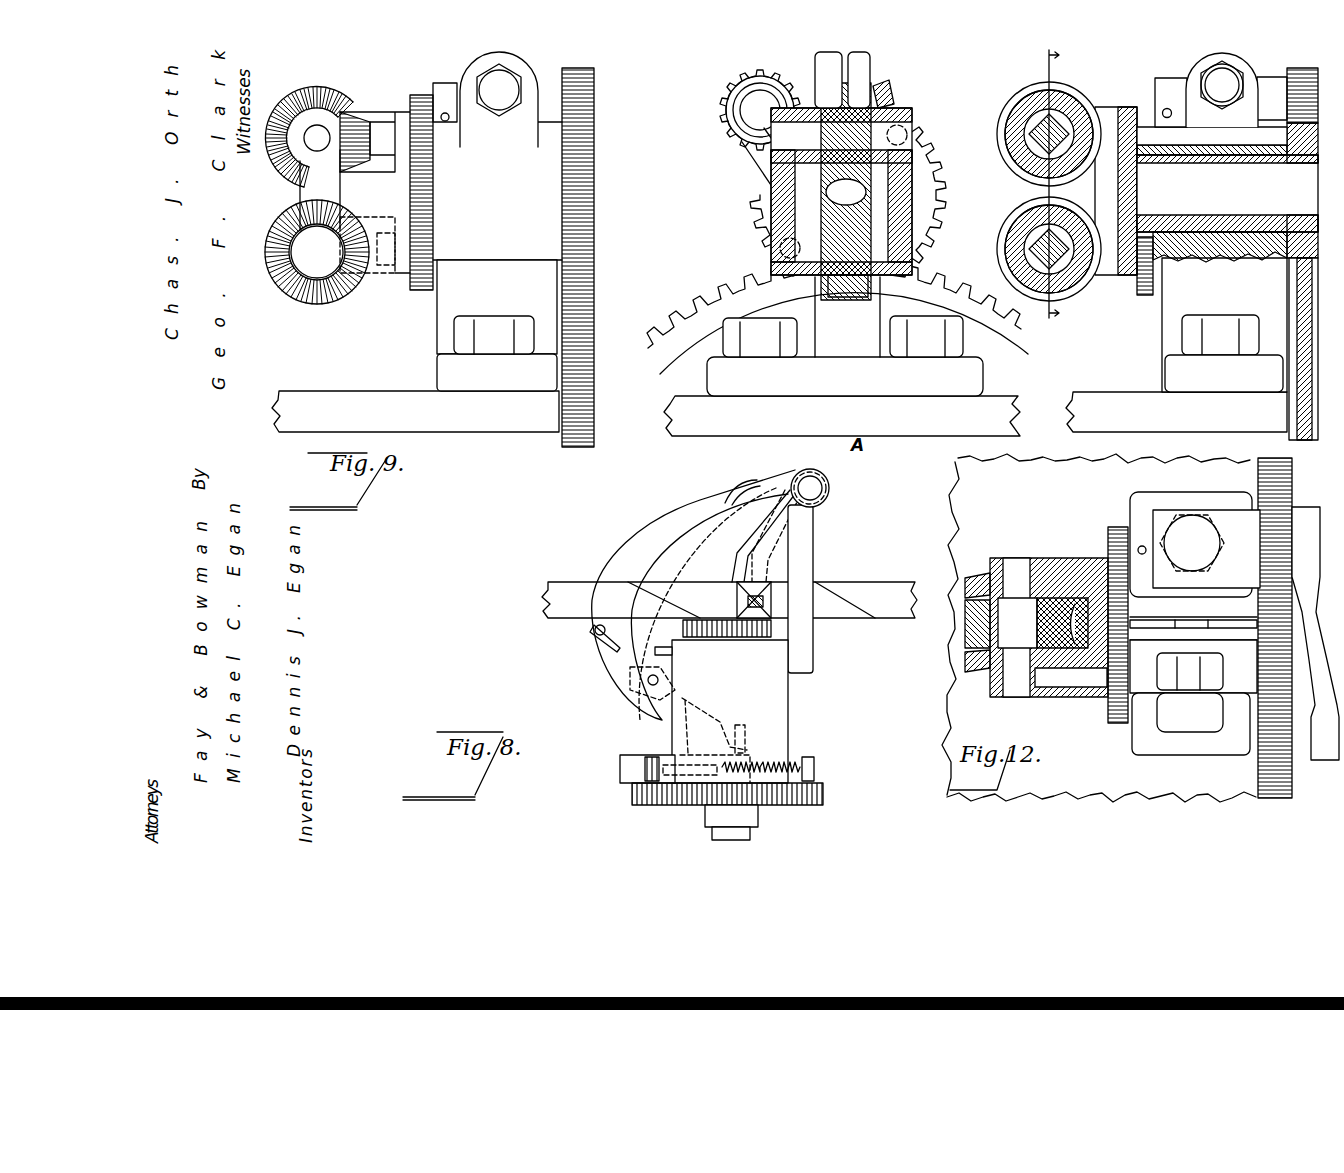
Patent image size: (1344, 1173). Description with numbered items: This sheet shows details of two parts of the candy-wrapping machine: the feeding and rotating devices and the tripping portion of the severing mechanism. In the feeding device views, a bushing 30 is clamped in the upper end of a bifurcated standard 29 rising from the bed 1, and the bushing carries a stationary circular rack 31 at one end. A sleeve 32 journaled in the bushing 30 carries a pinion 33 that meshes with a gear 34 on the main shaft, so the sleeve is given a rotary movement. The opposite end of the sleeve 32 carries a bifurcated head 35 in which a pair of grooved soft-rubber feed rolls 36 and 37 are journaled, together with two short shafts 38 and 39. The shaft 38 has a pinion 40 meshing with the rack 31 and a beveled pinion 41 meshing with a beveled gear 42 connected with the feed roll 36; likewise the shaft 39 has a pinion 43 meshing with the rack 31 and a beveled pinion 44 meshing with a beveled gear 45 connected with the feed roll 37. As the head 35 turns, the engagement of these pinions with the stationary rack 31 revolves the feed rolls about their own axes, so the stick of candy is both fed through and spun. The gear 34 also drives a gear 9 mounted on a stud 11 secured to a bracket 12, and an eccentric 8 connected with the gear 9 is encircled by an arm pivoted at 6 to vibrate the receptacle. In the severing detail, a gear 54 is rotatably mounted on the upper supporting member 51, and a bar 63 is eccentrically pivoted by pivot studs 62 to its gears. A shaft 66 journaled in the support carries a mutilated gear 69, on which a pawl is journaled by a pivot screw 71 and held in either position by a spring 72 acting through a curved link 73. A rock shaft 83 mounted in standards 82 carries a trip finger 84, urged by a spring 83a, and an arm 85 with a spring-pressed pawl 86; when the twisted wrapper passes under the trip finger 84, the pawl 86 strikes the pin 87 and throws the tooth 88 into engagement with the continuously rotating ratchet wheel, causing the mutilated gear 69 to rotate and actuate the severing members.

In FIG. 9, the bed 1 is at (468, 422).
In FIG. 11, the bed 1 is at (895, 423).
In FIG. 10, the bed 1 is at (1117, 396).
In FIG. 12, the bed 1 is at (1045, 462).
In FIG. 12, the pivot 6 is at (1322, 668).
In FIG. 12, the eccentric 8 is at (1303, 547).
In FIG. 9, the gear 9 is at (588, 96).
In FIG. 11, the gear 9 is at (732, 102).
In FIG. 10, the gear 9 is at (1307, 70).
In FIG. 12, the gear 9 is at (1290, 520).
In FIG. 11, the stud 11 is at (754, 120).
In FIG. 10, the stud 11 is at (1051, 183).
In FIG. 12, the stud 11 is at (1143, 520).
In FIG. 9, the bracket 12 is at (546, 80).
In FIG. 11, the bracket 12 is at (764, 162).
In FIG. 10, the bracket 12 is at (1269, 80).
In FIG. 12, the bracket 12 is at (1222, 517).
In FIG. 9, the bifurcated standard 29 is at (449, 309).
In FIG. 10, the bifurcated standard 29 is at (1162, 311).
In FIG. 10, the bushing 30 is at (1235, 153).
In FIG. 9, the stationary circular rack 31 is at (420, 204).
In FIG. 10, the stationary circular rack 31 is at (1180, 148).
In FIG. 12, the stationary circular rack 31 is at (1128, 616).
In FIG. 10, the sleeve 32 is at (1235, 166).
In FIG. 9, the pinion 33 is at (578, 195).
In FIG. 10, the pinion 33 is at (1294, 168).
In FIG. 12, the pinion 33 is at (1282, 640).
In FIG. 9, the gear 34 is at (588, 401).
In FIG. 11, the gear 34 is at (1002, 352).
In FIG. 10, the gear 34 is at (1289, 287).
In FIG. 12, the gear 34 is at (1277, 487).
In FIG. 9, the bifurcated head 35 is at (320, 188).
In FIG. 11, the bifurcated head 35 is at (771, 191).
In FIG. 10, the bifurcated head 35 is at (1109, 203).
In FIG. 12, the bifurcated head 35 is at (1050, 557).
In FIG. 11, the feed roll 36 is at (877, 80).
In FIG. 10, the feed roll 36 is at (1037, 92).
In FIG. 12, the feed roll 36 is at (983, 622).
In FIG. 9, the feed roll 37 is at (301, 277).
In FIG. 11, the feed roll 37 is at (860, 299).
In FIG. 10, the feed roll 37 is at (1023, 217).
In FIG. 9, the short shaft 38 is at (381, 124).
In FIG. 11, the short shaft 38 is at (911, 116).
In FIG. 12, the short shaft 38 is at (1080, 703).
In FIG. 9, the short shaft 39 is at (381, 261).
In FIG. 11, the short shaft 39 is at (754, 248).
In FIG. 9, the pinion 40 is at (434, 90).
In FIG. 11, the pinion 40 is at (924, 130).
In FIG. 12, the pinion 40 is at (1123, 723).
In FIG. 9, the beveled pinion 41 is at (354, 110).
In FIG. 12, the beveled pinion 41 is at (1060, 700).
In FIG. 9, the beveled gear 42 is at (298, 97).
In FIG. 11, the beveled gear 42 is at (894, 84).
In FIG. 12, the beveled gear 42 is at (987, 660).
In FIG. 9, the pinion 43 is at (421, 287).
In FIG. 11, the pinion 43 is at (756, 231).
In FIG. 10, the pinion 43 is at (1137, 288).
In FIG. 12, the pinion 43 is at (1110, 527).
In FIG. 9, the beveled pinion 44 is at (366, 230).
In FIG. 9, the beveled gear 45 is at (271, 248).
In FIG. 11, the beveled gear 45 is at (786, 292).
In FIG. 12, the beveled gear 45 is at (973, 578).
In FIG. 8, the upper supporting member 51 is at (778, 694).
In FIG. 8, the gear 54 is at (733, 640).
In FIG. 8, the pivot stud 62 is at (770, 587).
In FIG. 8, the bar 63 is at (747, 597).
In FIG. 8, the shaft 66 is at (758, 836).
In FIG. 8, the mutilated gear 69 is at (822, 793).
In FIG. 8, the pivot screw 71 is at (693, 723).
In FIG. 8, the spring 72 is at (800, 760).
In FIG. 8, the curved link 73 is at (697, 800).
In FIG. 8, the standard 82 is at (808, 550).
In FIG. 8, the rock shaft 83 is at (821, 489).
In FIG. 8, the spring 83a is at (752, 480).
In FIG. 8, the trip finger 84 is at (742, 538).
In FIG. 8, the arm 85 is at (667, 518).
In FIG. 8, the spring-pressed pawl 86 is at (660, 707).
In FIG. 8, the pin 87 is at (740, 725).
In FIG. 8, the tooth 88 is at (620, 769).